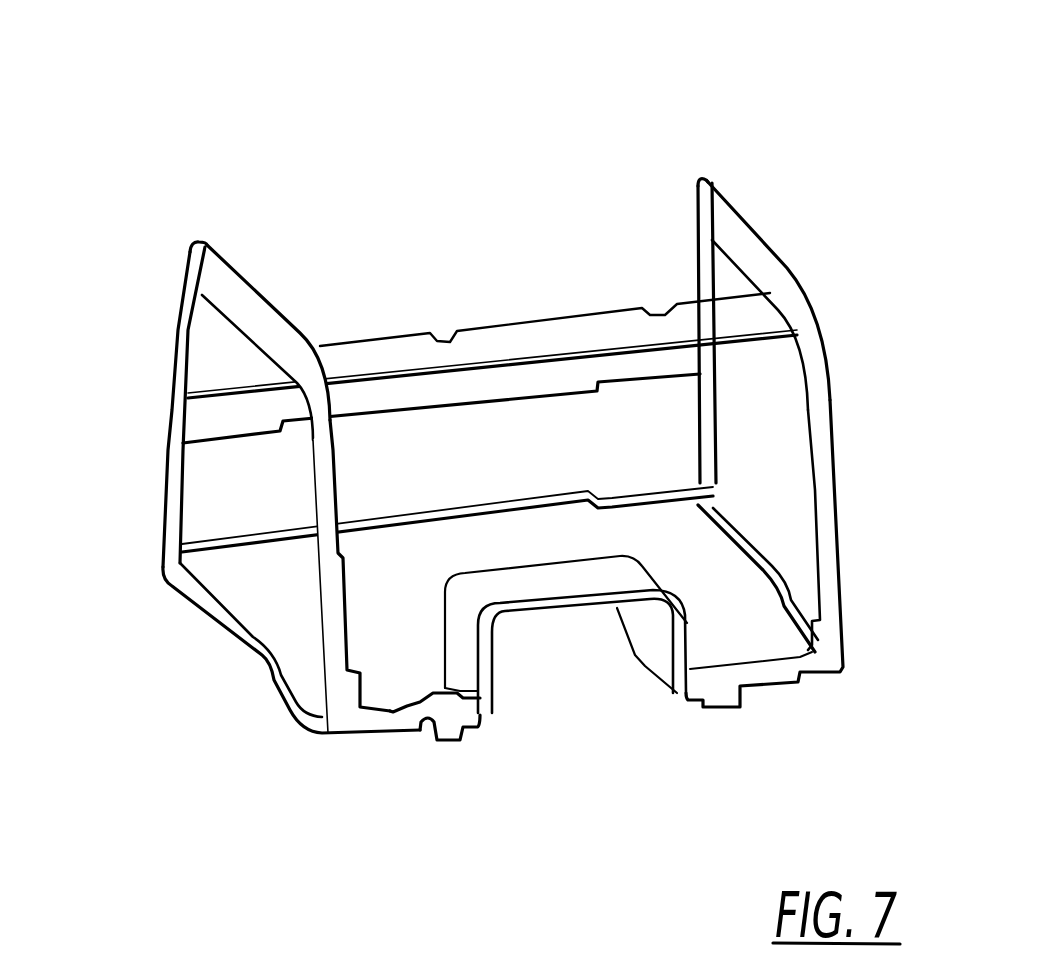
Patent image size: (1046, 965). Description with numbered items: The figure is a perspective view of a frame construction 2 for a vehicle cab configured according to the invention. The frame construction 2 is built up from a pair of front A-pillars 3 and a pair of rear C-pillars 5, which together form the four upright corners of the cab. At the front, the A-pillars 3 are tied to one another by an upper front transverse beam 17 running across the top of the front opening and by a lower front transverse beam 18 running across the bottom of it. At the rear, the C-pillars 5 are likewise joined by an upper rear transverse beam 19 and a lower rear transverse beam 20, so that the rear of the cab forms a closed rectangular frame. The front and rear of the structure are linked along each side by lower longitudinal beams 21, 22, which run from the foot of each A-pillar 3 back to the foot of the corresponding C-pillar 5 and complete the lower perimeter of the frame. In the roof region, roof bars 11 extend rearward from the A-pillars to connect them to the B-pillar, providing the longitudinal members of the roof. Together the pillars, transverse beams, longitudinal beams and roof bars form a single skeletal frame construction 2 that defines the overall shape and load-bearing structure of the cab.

The frame construction 2 is at (766, 111).
The front A-pillars 3 is at (346, 593).
The rear C-pillars 5 is at (697, 268).
The roof bars 11 is at (263, 317).
The upper front transverse beam 17 is at (487, 337).
The lower front transverse beam 18 is at (480, 711).
The upper rear transverse beam 19 is at (232, 427).
The lower rear transverse beam 20 is at (229, 552).
The lower longitudinal beam 21 is at (277, 693).
The lower longitudinal beam 22 is at (777, 593).